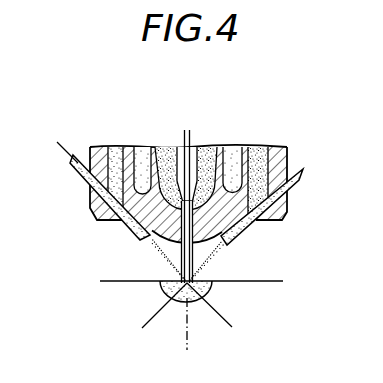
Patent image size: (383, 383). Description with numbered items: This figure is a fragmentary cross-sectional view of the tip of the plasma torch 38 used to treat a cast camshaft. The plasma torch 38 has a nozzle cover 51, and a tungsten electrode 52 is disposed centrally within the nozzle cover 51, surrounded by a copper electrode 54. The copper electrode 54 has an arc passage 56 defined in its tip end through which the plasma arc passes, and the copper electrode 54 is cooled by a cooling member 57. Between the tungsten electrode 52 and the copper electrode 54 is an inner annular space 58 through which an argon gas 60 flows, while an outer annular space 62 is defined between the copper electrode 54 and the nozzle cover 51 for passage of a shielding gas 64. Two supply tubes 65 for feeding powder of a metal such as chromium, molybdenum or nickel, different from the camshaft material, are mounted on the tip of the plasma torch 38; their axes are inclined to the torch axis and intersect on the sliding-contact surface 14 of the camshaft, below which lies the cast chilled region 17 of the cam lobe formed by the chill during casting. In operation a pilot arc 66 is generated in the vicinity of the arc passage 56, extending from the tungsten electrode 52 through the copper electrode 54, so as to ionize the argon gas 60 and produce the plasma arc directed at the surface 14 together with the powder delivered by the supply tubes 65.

The sliding-contact surface 14 is at (229, 281).
The cast chilled region 17 is at (251, 282).
The plasma torch 38 is at (296, 202).
The nozzle cover 51 is at (95, 213).
The tungsten electrode 52 is at (194, 160).
The copper electrode 54 is at (131, 230).
The arc passage 56 is at (167, 245).
The cooling member 57 is at (141, 160).
The inner annular space 58 is at (263, 147).
The argon gas 60 is at (166, 158).
The outer annular space 62 is at (270, 169).
The shielding gas 64 is at (114, 160).
The supply tubes 65 is at (83, 172).
The pilot arc 66 is at (193, 211).